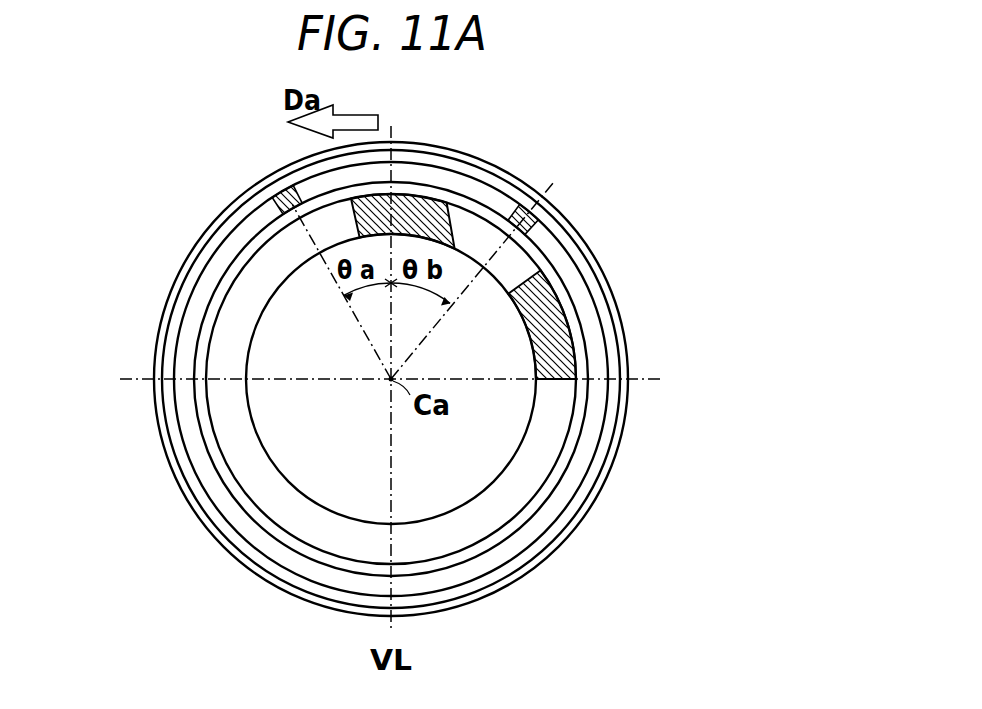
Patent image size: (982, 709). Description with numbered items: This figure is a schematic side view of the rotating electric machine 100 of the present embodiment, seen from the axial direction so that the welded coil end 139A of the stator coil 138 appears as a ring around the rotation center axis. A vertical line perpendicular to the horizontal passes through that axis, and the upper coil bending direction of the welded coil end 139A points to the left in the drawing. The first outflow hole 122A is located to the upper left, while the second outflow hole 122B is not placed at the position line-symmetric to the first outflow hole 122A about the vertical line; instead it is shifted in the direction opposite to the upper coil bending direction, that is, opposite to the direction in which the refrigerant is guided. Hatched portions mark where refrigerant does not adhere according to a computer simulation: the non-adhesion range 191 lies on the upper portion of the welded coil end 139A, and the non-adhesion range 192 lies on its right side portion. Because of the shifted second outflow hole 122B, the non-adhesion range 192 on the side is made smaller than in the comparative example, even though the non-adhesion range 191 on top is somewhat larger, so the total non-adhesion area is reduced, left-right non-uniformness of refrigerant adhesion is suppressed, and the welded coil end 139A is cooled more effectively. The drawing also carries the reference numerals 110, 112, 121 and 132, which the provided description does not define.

The rotating electric machine 100 is at (656, 136).
The housing 110 is at (581, 236).
The outer cylindrical portion 112 is at (157, 337).
The ring member 121 is at (268, 167).
The first outflow hole 122A is at (278, 196).
The second outflow hole 122B is at (522, 222).
The intermediate cylindrical portion 132 is at (220, 290).
The stator coil 138 is at (267, 267).
The welded coil end 139A is at (258, 504).
The non-adhesion range 191 is at (407, 194).
The non-adhesion range 192 is at (562, 313).